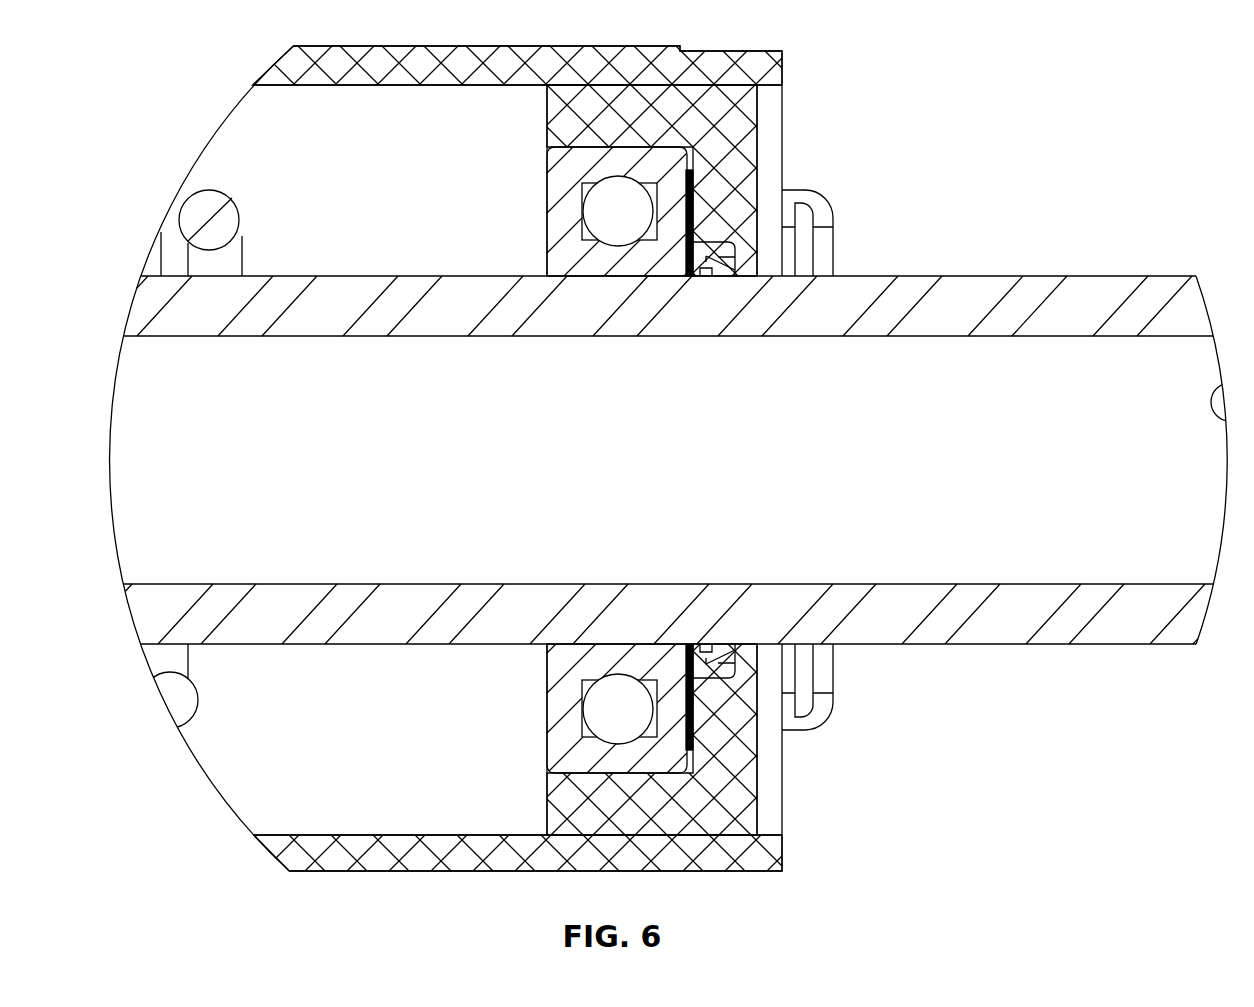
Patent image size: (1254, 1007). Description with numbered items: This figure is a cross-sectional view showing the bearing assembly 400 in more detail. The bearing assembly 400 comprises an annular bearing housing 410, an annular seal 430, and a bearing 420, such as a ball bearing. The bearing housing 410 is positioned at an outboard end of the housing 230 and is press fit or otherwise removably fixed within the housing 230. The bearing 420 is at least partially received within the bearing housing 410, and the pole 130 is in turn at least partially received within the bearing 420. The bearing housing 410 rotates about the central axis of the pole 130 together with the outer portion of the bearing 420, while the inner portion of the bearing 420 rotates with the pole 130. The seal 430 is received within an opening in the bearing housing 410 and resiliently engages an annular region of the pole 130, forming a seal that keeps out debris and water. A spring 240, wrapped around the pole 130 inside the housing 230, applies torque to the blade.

The pole 130 is at (1035, 276).
The housing 230 is at (732, 872).
The spring 240 is at (233, 200).
The bearing assembly 400 is at (878, 158).
The bearing housing 410 is at (760, 150).
The bearing 420 is at (547, 222).
The seal 430 is at (735, 245).